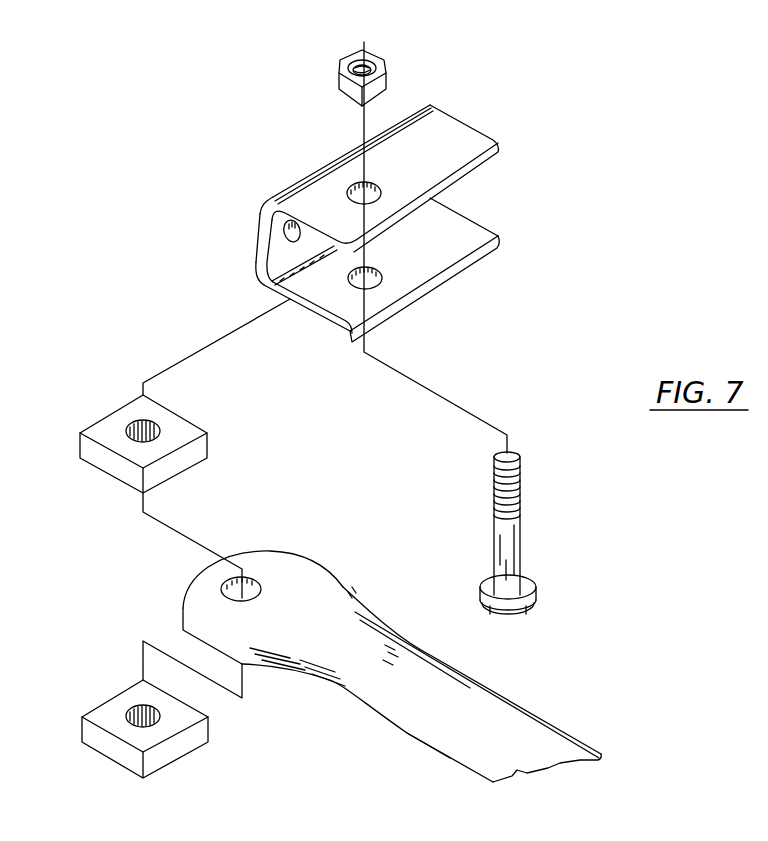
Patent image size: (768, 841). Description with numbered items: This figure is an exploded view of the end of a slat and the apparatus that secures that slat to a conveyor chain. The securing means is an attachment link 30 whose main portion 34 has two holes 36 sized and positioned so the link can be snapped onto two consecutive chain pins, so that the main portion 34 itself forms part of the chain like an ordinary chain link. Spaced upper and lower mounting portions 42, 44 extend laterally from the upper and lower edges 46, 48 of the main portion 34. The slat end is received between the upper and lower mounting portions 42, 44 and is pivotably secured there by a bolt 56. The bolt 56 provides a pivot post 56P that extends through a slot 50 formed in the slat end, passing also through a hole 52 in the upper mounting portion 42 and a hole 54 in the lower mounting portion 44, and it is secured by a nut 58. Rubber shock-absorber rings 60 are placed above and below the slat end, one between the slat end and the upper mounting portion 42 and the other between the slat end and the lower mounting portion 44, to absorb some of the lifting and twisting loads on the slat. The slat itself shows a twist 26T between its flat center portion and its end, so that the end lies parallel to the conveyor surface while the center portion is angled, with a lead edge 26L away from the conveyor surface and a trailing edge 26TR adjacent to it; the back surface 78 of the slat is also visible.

The nut 58 is at (375, 63).
The attachment link 30 is at (376, 219).
The upper mounting portion 42 is at (409, 174).
The upper edge 46 is at (310, 177).
The hole 52 is at (376, 190).
The holes 36 is at (280, 228).
The main portion 34 is at (265, 247).
The lower edge 48 is at (262, 287).
The hole 54 is at (376, 275).
The lower mounting portion 44 is at (351, 270).
The rubber shock-absorber rings 60 is at (183, 428).
The slot 50 is at (247, 585).
The twist 26T is at (338, 666).
The lead edge 26L is at (430, 653).
The pivot post 56P is at (512, 553).
The bolt 56 is at (534, 547).
The trailing edge 26TR is at (353, 700).
The back surface 78 is at (402, 700).